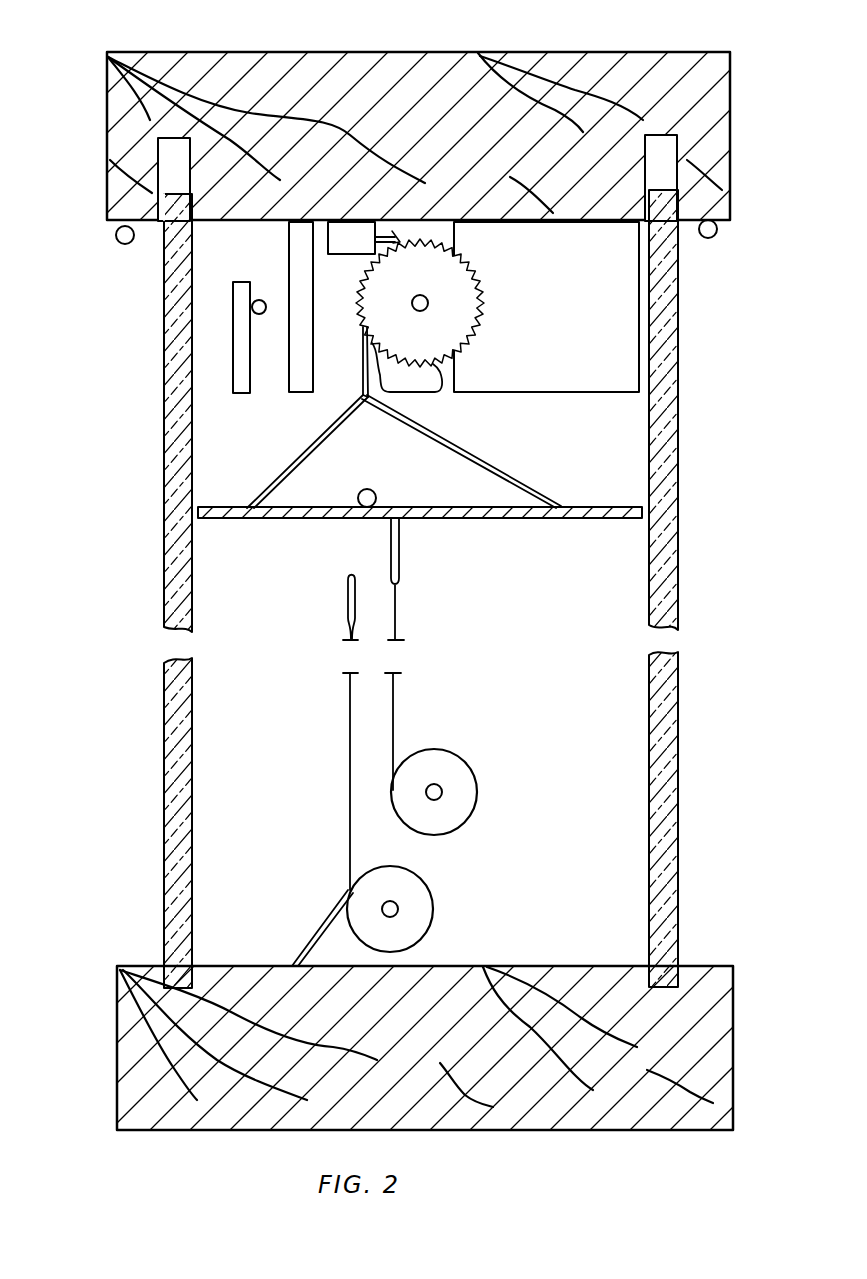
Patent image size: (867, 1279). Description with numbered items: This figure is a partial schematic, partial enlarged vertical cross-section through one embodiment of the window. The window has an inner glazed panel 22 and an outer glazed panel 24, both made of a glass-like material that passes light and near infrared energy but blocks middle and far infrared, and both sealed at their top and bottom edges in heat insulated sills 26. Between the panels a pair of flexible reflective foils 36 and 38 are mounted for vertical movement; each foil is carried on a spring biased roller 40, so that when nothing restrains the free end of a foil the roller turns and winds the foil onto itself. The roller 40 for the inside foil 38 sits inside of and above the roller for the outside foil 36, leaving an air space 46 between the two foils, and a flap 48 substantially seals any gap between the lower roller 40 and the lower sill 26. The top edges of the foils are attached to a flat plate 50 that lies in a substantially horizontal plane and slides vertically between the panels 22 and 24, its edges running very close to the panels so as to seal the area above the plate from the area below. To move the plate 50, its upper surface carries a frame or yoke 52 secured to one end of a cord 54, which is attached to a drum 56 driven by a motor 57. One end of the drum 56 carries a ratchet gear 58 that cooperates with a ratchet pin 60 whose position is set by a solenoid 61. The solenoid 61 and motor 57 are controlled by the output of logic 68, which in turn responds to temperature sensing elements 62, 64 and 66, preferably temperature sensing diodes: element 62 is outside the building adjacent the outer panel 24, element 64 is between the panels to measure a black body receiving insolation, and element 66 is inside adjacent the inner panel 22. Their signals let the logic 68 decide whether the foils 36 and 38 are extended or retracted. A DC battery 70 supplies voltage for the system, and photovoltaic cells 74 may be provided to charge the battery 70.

The inner glazed panel 22 is at (680, 915).
The outer glazed panel 24 is at (162, 884).
The heat insulated sills 26 is at (408, 52).
The outside foil 36 is at (348, 796).
The inside foil 38 is at (398, 715).
The spring biased roller 40 is at (452, 770).
The air space 46 is at (377, 704).
The flap 48 is at (320, 923).
The flat plate 50 is at (296, 507).
The frame or yoke 52 is at (342, 413).
The cord 54 is at (362, 352).
The drum 56 is at (458, 290).
The motor 57 is at (436, 392).
The ratchet gear 58 is at (447, 303).
The ratchet pin 60 is at (398, 235).
The solenoid 61 is at (350, 245).
The temperature sensing element 62 is at (125, 245).
The temperature sensing element 64 is at (266, 300).
The temperature sensing element 66 is at (714, 238).
The logic card 68 is at (302, 392).
The DC battery 70 is at (546, 307).
The photovoltaic cells 74 is at (241, 393).